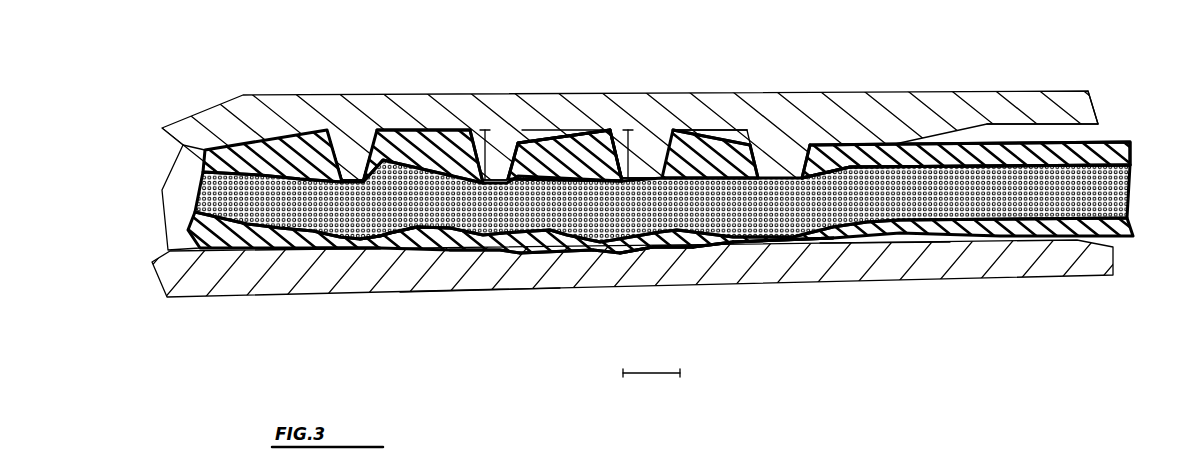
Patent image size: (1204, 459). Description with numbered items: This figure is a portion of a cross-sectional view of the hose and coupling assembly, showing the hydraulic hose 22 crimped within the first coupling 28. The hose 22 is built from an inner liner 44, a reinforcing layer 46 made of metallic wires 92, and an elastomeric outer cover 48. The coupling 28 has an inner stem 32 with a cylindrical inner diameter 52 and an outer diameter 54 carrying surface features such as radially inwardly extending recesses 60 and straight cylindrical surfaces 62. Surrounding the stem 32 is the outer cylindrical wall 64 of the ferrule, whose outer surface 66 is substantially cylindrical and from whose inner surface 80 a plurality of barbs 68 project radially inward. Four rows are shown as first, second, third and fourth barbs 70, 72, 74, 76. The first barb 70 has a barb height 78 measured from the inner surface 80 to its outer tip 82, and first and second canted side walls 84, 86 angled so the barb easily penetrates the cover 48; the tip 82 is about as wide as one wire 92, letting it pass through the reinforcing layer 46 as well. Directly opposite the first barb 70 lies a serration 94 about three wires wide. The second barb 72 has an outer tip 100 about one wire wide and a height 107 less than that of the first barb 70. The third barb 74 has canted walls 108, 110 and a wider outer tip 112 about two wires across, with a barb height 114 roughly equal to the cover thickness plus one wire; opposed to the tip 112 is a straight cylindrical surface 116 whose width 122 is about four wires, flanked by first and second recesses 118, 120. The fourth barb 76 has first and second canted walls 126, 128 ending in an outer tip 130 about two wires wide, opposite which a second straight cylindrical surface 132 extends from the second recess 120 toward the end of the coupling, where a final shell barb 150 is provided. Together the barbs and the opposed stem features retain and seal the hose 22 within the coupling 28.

The hydraulic hose 22 is at (1134, 125).
The first coupling 28 is at (1071, 90).
The inner stem 32 is at (1113, 262).
The inner liner 44 is at (1135, 226).
The reinforcing layer 46 is at (1130, 190).
The outer cover 48 is at (1133, 155).
The cylindrical inner diameter 52 is at (463, 295).
The outer diameter 54 is at (877, 253).
The recesses 60 is at (500, 253).
The straight cylindrical surfaces 62 is at (667, 252).
The outer cylindrical wall 64 is at (350, 120).
The outer surface 66 is at (680, 120).
The barbs 68 is at (361, 170).
The first barb 70 is at (365, 140).
The second barb 72 is at (510, 137).
The third barb 74 is at (643, 145).
The fourth barb 76 is at (773, 145).
The barb height 78 is at (337, 146).
The inner surface 80 is at (407, 130).
The outer tip 82 is at (377, 227).
The first canted side wall 84 is at (343, 150).
The second canted side wall 86 is at (413, 228).
The reinforcing wires 92 is at (868, 162).
The serration 94 is at (342, 245).
The outer tip 100 is at (532, 253).
The height 107 is at (487, 132).
The canted wall 108 is at (600, 147).
The canted wall 110 is at (688, 133).
The outer tip 112 is at (707, 250).
The barb height 114 is at (619, 146).
The straight cylindrical surface 116 is at (643, 250).
The first recess 118 is at (610, 258).
The second recess 120 is at (693, 250).
The width 122 is at (653, 375).
The first canted wall 126 is at (740, 140).
The second canted wall 128 is at (823, 147).
The outer tip 130 is at (807, 247).
The second straight cylindrical surface 132 is at (777, 247).
The final shell barb 150 is at (1098, 120).